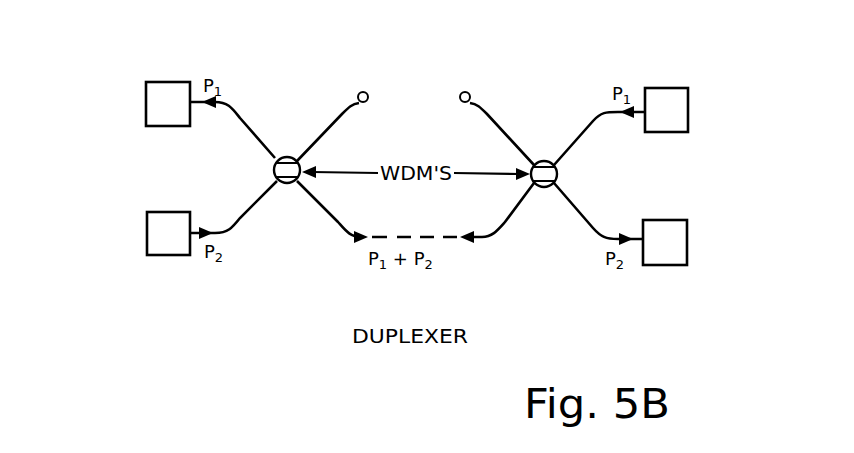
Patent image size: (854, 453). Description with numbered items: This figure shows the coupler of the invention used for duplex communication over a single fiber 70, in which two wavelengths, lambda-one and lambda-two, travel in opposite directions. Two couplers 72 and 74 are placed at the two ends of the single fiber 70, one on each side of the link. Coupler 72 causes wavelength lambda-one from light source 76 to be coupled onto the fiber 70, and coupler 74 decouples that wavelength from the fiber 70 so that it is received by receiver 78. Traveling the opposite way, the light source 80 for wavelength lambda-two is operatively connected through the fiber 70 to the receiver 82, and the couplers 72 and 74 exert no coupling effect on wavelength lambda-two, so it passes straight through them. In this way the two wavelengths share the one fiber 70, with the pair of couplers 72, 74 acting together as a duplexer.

The single fiber 70 is at (402, 232).
The coupler 72 is at (545, 158).
The coupler 74 is at (281, 148).
The light source 76 is at (665, 88).
The receiver 78 is at (163, 82).
The light source 80 is at (163, 255).
The receiver 82 is at (668, 265).